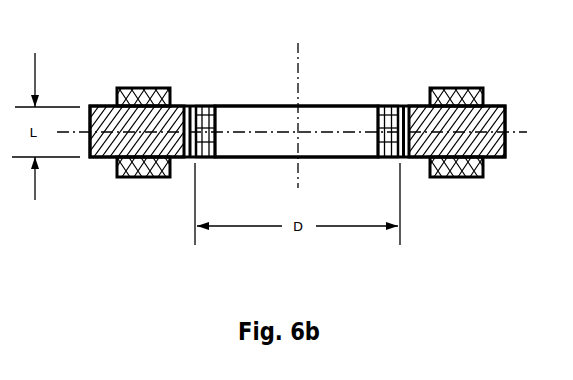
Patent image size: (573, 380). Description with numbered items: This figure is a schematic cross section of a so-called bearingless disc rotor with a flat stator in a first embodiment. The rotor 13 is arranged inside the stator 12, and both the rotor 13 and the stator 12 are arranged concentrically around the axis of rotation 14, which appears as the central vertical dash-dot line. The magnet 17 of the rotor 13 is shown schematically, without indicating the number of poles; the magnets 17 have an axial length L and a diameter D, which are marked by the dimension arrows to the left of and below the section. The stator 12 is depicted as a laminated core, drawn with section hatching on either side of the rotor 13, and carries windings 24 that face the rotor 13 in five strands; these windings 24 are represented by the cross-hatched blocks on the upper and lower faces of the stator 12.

The stator 12 is at (421, 119).
The rotor 13 is at (250, 118).
The axis of rotation 14 is at (299, 72).
The magnet 17 is at (204, 118).
The windings 24 is at (139, 88).